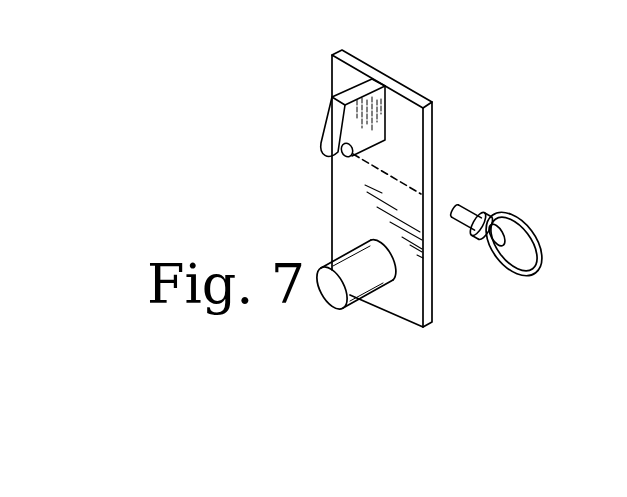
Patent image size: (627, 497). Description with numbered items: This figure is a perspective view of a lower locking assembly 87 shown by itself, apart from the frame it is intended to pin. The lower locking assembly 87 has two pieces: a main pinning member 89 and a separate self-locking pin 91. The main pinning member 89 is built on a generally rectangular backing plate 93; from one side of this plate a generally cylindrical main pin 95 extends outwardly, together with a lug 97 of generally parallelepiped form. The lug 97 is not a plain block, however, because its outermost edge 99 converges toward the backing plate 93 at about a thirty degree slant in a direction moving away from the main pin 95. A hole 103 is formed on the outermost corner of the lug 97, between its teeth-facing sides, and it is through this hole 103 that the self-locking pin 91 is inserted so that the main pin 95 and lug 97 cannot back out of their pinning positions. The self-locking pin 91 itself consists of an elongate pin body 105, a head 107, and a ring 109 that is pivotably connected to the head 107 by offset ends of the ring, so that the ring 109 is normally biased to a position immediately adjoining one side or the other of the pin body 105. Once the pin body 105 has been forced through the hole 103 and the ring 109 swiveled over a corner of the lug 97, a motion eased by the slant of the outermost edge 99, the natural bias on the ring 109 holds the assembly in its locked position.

The lower locking assembly 87 is at (538, 101).
The main pinning member 89 is at (441, 148).
The self-locking pin 91 is at (464, 197).
The backing plate 93 is at (432, 311).
The main pin 95 is at (333, 293).
The lug 97 is at (345, 165).
The outermost edge 99 is at (333, 123).
The hole 103 is at (333, 143).
The pin body 105 is at (469, 229).
The head 107 is at (499, 234).
The ring 109 is at (533, 278).